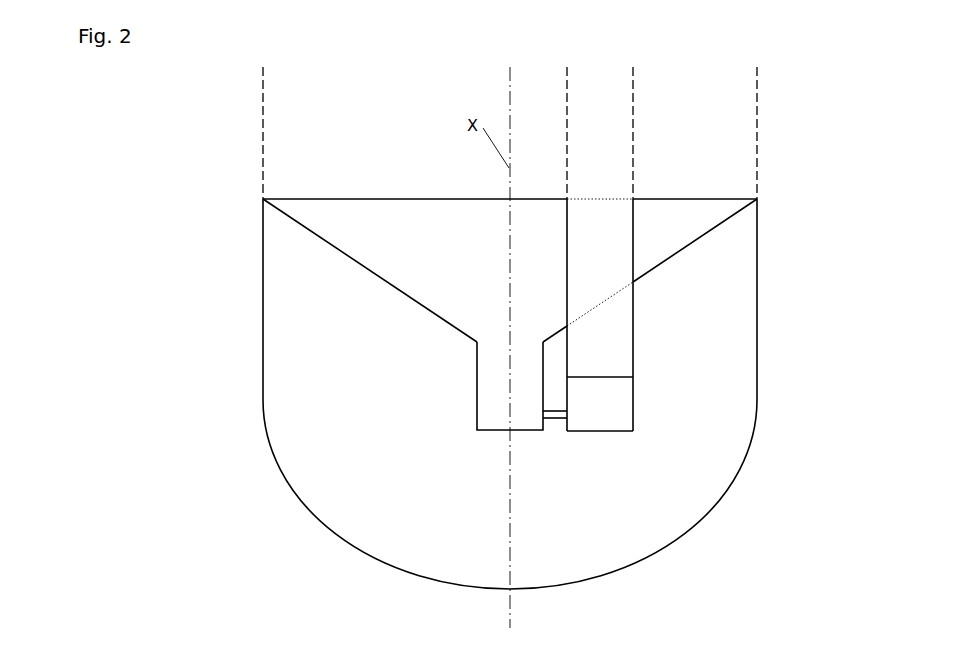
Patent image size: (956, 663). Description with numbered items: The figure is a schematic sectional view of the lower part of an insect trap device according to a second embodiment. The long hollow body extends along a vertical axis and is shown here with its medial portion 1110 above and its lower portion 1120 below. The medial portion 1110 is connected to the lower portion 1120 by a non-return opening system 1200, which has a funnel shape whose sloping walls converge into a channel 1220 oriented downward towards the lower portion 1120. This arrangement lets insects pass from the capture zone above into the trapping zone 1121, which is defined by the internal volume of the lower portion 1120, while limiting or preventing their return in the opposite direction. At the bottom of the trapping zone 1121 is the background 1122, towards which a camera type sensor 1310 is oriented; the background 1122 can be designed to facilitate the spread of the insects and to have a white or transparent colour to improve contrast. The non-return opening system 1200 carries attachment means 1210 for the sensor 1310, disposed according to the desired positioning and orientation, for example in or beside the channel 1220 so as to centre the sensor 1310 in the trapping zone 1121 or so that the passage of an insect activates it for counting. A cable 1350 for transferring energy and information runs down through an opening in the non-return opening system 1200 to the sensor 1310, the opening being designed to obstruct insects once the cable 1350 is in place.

The medial portion 1110 is at (263, 168).
The lower portion 1120 is at (263, 399).
The trapping zone 1121 is at (370, 467).
The background 1122 is at (720, 508).
The non-return opening system 1200 is at (370, 271).
The channel 1220 is at (469, 342).
The attachment means 1210 is at (554, 422).
The sensor 1310 is at (634, 400).
The cable 1350 is at (634, 343).